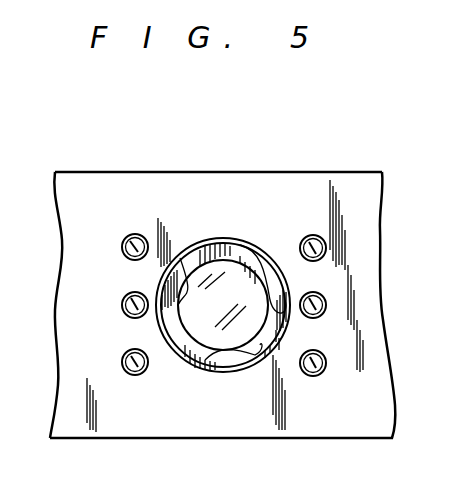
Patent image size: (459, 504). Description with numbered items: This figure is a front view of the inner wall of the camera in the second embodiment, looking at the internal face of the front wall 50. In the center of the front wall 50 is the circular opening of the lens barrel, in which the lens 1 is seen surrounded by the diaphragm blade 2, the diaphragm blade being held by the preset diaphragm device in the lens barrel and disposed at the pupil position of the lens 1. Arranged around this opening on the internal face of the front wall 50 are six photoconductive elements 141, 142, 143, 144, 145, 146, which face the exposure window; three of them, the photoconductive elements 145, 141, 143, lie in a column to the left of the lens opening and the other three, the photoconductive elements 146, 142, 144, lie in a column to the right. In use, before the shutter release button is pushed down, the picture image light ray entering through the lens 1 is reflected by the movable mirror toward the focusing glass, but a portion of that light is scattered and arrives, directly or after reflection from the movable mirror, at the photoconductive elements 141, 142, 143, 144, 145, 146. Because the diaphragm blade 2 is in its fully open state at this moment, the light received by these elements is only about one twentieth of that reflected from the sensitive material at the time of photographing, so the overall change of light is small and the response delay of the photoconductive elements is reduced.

The lens 1 is at (236, 320).
The diaphragm blade 2 is at (240, 240).
The front wall 50 is at (112, 180).
The photoconductive element 141 is at (125, 298).
The photoconductive element 142 is at (326, 305).
The photoconductive element 143 is at (133, 375).
The photoconductive element 144 is at (312, 376).
The photoconductive element 145 is at (125, 240).
The photoconductive element 146 is at (326, 247).